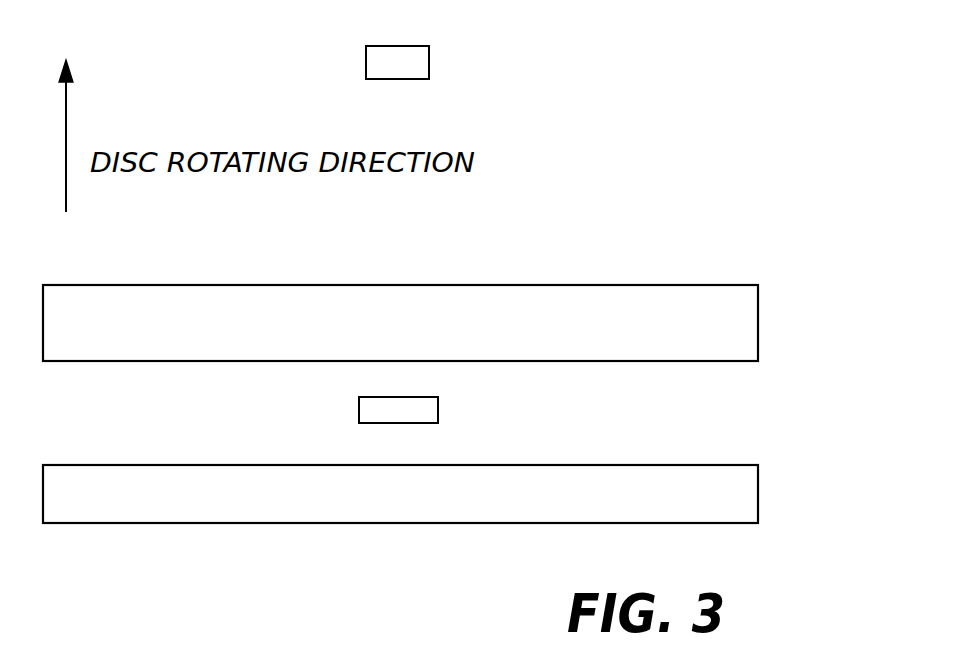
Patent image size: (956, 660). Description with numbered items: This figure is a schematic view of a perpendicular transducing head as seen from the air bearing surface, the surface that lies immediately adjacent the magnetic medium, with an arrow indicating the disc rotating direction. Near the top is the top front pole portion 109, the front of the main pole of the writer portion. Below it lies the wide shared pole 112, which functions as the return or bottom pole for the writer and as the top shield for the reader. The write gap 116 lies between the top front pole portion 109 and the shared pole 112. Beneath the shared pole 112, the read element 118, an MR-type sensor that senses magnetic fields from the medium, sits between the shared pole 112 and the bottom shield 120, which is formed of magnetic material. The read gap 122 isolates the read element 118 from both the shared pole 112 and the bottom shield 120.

The top front pole portion 109 is at (422, 65).
The shared pole 112 is at (739, 318).
The write gap 116 is at (604, 202).
The read element 118 is at (436, 410).
The bottom shield 120 is at (735, 499).
The read gap 122 is at (720, 404).